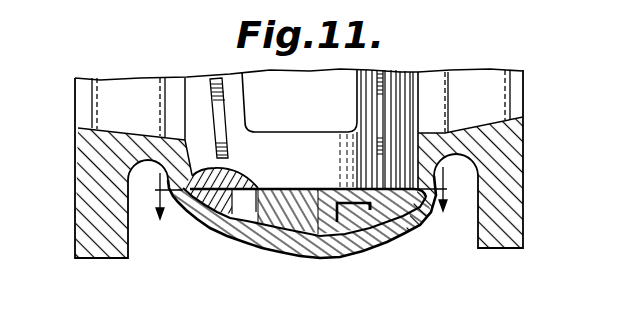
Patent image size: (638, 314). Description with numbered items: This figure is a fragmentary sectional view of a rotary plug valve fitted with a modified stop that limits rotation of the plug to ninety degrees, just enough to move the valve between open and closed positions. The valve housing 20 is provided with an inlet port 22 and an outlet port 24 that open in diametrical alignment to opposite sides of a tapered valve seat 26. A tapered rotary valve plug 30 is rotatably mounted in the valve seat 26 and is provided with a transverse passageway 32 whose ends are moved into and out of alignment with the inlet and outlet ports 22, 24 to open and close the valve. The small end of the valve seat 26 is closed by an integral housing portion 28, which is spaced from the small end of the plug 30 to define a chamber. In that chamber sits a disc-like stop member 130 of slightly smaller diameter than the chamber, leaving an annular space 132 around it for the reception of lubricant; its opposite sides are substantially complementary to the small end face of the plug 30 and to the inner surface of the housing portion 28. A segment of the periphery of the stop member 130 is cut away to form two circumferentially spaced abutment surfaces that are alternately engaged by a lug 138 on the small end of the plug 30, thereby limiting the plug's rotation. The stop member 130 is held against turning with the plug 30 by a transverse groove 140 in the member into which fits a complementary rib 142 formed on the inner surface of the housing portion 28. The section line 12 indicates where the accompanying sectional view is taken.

The section line 12- 12 is at (299, 193).
The valve housing 20 is at (129, 226).
The inlet port 22 is at (187, 141).
The outlet port 24 is at (430, 133).
The tapered valve seat 26 is at (190, 153).
The integral housing portion 28 is at (251, 249).
The tapered rotary valve plug 30 is at (195, 100).
The transverse passageway 32 is at (342, 82).
The disc-like stop member 130 is at (305, 222).
The annular space 132 is at (428, 214).
The lug 138 is at (222, 215).
The transverse groove 140 is at (352, 226).
The rib 142 is at (380, 237).